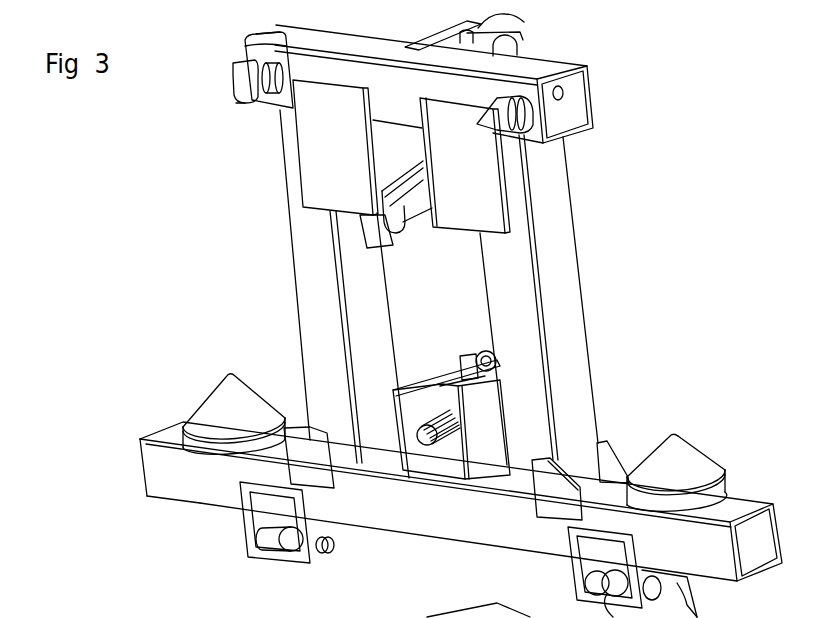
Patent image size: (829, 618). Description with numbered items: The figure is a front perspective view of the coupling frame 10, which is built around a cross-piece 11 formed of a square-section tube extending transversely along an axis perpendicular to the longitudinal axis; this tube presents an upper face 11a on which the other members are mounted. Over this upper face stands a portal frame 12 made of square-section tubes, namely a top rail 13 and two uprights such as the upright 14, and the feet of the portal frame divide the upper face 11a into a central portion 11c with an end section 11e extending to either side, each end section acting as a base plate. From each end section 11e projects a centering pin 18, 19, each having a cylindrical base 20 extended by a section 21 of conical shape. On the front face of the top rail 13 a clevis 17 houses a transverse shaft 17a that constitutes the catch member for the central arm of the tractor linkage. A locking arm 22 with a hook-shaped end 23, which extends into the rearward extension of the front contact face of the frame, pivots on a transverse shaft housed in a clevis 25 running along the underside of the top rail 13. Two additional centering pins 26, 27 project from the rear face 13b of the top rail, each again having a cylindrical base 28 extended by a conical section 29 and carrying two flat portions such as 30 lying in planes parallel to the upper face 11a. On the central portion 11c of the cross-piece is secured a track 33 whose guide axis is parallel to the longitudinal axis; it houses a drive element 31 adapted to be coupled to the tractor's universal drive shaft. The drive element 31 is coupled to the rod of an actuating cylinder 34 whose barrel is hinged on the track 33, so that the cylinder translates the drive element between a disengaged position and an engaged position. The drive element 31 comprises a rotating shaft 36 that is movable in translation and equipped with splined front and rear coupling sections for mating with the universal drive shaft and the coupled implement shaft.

The coupling frame 10 is at (205, 233).
The cross-piece 11 is at (210, 517).
The upper face 11a is at (183, 423).
The central portion 11c is at (475, 530).
The end section 11e is at (158, 463).
The portal frame 12 is at (636, 307).
The top rail 13 is at (553, 65).
The rear face 13b is at (247, 57).
The upright 14 is at (568, 297).
The clevis 17 is at (523, 37).
The transverse shaft 17a is at (498, 15).
The centering pin 18 is at (704, 448).
The centering pin 19 is at (245, 374).
The cylindrical base 20 is at (722, 490).
The conical section 21 is at (657, 460).
The locking arm 22 is at (440, 210).
The hook-shaped end 23 is at (375, 240).
The clevis 25 is at (383, 147).
The additional centering pin 26 is at (226, 95).
The additional centering pin 27 is at (530, 153).
The cylindrical base 28 is at (279, 32).
The conical section 29 is at (250, 87).
The flat portion 30 is at (245, 45).
The drive element 31 is at (428, 388).
The track 33 is at (495, 403).
The actuating cylinder 34 is at (480, 355).
The rotating shaft 36 is at (440, 442).